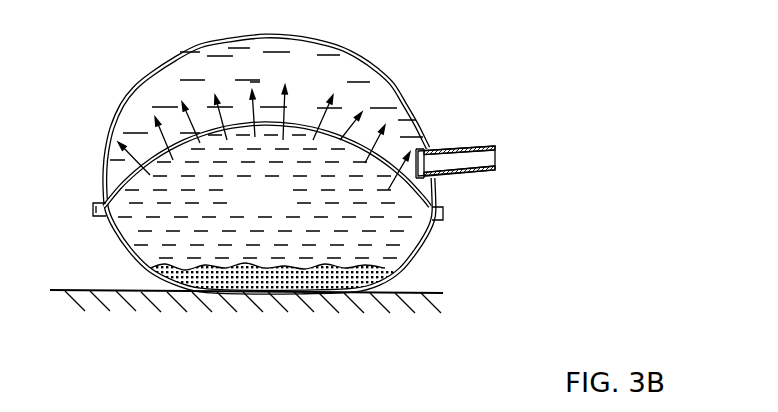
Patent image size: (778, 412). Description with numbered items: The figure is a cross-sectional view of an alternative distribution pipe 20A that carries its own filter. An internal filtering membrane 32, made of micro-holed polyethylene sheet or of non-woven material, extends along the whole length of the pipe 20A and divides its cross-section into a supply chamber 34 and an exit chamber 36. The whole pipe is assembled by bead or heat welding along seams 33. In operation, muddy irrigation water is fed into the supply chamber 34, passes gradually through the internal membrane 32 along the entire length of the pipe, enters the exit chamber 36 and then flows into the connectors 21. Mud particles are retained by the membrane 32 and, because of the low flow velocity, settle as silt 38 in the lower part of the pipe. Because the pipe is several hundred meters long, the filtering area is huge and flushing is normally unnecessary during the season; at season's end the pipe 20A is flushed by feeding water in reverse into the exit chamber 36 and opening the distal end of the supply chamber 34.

The distribution pipe 20A is at (378, 60).
The connectors 21 is at (467, 146).
The internal filtering membrane 32 is at (150, 161).
The seams 33 is at (93, 205).
The supply chamber 34 is at (262, 211).
The exit chamber 36 is at (312, 81).
The silt 38 is at (237, 280).